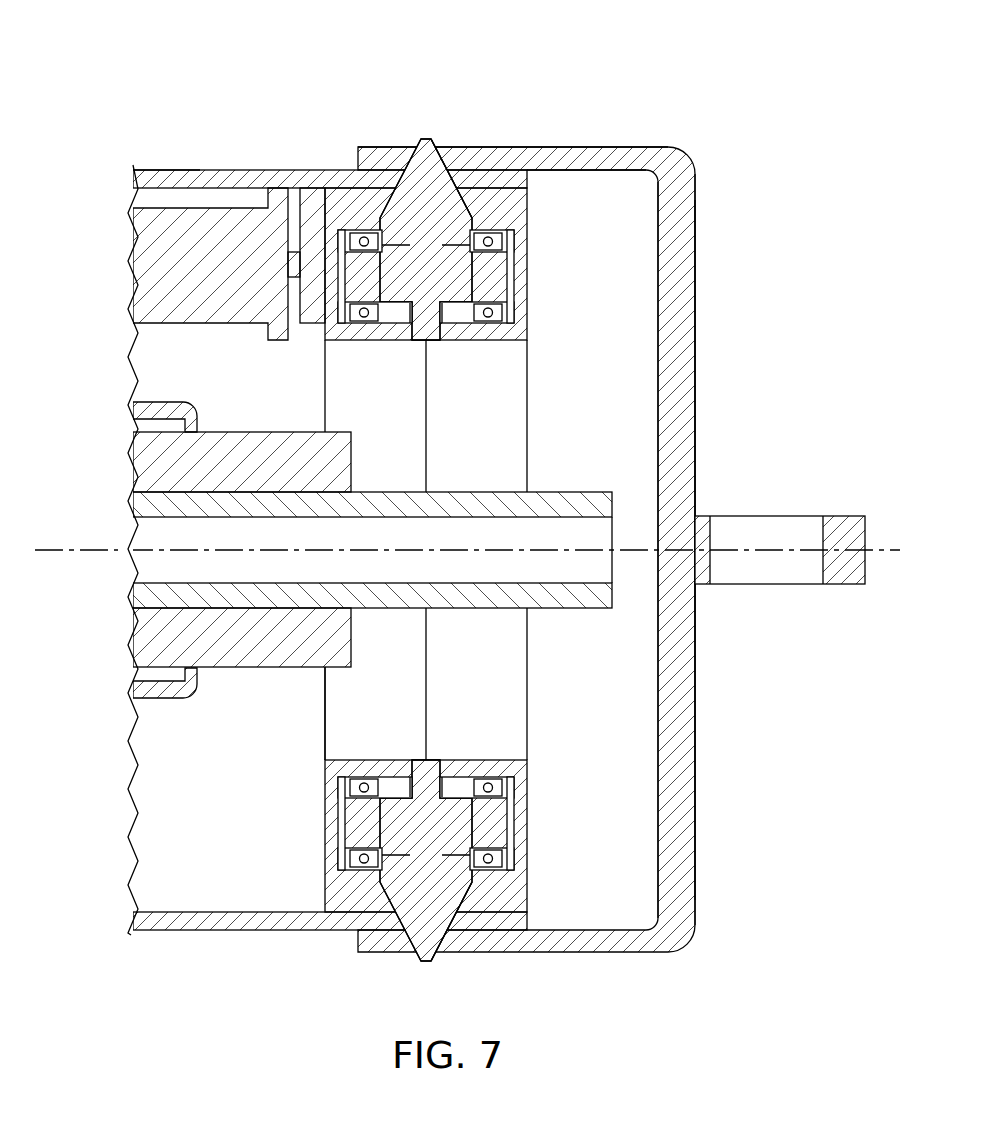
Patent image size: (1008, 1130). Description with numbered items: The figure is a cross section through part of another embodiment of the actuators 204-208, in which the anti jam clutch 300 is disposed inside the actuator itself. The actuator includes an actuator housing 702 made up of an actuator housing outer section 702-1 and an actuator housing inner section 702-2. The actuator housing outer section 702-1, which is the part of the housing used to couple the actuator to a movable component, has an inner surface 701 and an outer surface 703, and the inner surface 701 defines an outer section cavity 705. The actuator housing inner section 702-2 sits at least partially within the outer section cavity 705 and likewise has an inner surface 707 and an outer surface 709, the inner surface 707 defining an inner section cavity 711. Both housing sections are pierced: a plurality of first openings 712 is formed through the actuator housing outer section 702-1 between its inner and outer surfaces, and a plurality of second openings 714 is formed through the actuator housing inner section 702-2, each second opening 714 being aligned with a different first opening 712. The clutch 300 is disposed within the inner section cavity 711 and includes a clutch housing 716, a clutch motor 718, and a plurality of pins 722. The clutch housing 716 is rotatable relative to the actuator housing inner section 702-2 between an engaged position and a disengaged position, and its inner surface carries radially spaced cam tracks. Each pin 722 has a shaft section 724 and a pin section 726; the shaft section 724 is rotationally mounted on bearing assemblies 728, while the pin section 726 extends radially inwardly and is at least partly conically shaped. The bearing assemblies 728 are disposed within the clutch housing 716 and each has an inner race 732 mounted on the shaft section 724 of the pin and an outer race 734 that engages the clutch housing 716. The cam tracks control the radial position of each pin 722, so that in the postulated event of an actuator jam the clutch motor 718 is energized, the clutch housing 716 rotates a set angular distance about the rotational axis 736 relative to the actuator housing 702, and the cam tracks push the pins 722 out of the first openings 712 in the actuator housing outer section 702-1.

The actuators 204-208 is at (148, 112).
The anti jam clutch 300 is at (128, 288).
The inner surface 701 is at (590, 172).
The actuator housing 702 is at (685, 85).
The actuator housing outer section 702-1 is at (690, 152).
The actuator housing inner section 702-2 is at (133, 178).
The outer surface 703 is at (517, 147).
The outer section cavity 705 is at (643, 277).
The inner surface 707 is at (200, 912).
The outer surface 709 is at (238, 170).
The inner section cavity 711 is at (150, 822).
The first openings 712 is at (440, 148).
The second openings 714 is at (400, 178).
The clutch housing 716 is at (523, 905).
The clutch motor 718 is at (130, 248).
The pins 722 is at (402, 935).
The shaft section 724 is at (515, 822).
The pin section 726 is at (438, 932).
The bearing assemblies 728 is at (358, 222).
The inner race 732 is at (515, 300).
The outer race 734 is at (487, 323).
The rotational axis 736 is at (888, 550).